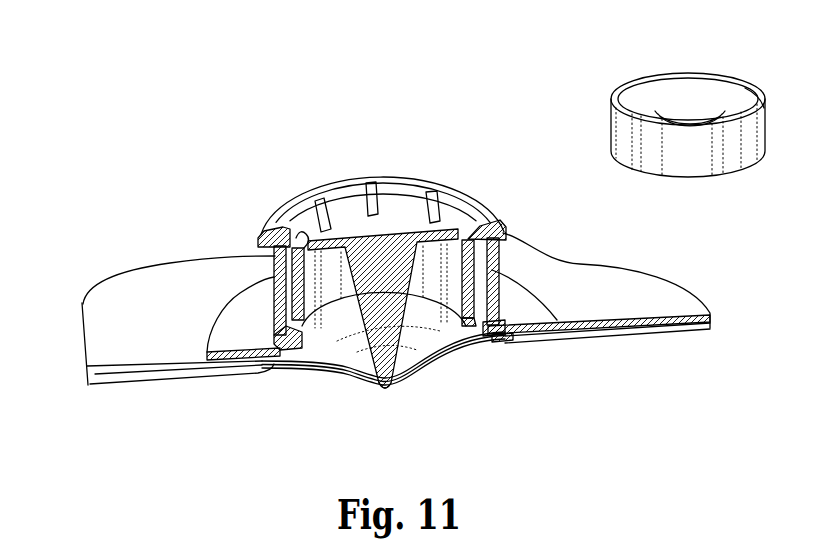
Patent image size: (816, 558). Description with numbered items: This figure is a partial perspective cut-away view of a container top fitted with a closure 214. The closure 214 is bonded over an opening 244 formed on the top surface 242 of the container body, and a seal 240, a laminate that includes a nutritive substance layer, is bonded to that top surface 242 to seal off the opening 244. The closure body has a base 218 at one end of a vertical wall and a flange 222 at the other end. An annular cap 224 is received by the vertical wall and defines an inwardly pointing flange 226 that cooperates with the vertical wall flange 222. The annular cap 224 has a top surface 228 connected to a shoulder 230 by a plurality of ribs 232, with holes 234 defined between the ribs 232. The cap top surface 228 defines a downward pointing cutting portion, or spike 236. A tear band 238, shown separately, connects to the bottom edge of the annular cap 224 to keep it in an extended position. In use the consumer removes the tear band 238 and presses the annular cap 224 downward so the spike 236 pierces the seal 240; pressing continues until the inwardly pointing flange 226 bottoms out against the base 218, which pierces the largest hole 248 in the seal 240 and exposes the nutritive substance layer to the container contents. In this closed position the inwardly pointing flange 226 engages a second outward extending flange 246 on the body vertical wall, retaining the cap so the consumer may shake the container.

The closure 214 is at (165, 162).
The base 218 is at (232, 320).
The flange 222 is at (272, 230).
The annular cap 224 is at (493, 259).
The inwardly pointing flange 226 is at (502, 338).
The top surface 228 is at (388, 220).
The shoulder 230 is at (482, 203).
The ribs 232 is at (365, 184).
The holes 234 is at (420, 195).
The spike 236 is at (388, 306).
The tear band 238 is at (697, 90).
The seal 240 is at (423, 343).
The top surface 242 is at (113, 338).
The opening 244 is at (491, 334).
The second outward extending flange 246 is at (305, 338).
The largest hole 248 is at (372, 377).